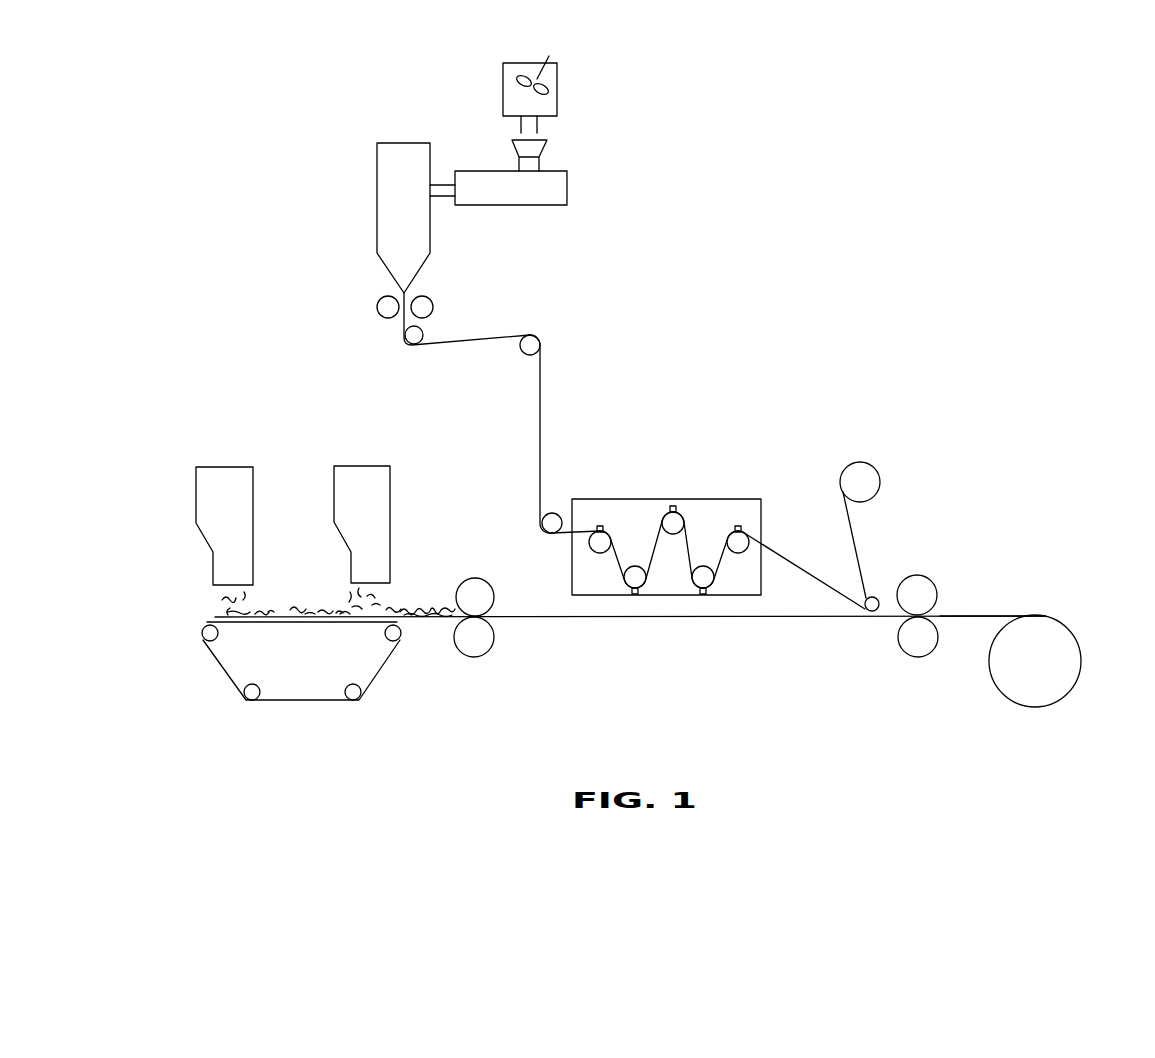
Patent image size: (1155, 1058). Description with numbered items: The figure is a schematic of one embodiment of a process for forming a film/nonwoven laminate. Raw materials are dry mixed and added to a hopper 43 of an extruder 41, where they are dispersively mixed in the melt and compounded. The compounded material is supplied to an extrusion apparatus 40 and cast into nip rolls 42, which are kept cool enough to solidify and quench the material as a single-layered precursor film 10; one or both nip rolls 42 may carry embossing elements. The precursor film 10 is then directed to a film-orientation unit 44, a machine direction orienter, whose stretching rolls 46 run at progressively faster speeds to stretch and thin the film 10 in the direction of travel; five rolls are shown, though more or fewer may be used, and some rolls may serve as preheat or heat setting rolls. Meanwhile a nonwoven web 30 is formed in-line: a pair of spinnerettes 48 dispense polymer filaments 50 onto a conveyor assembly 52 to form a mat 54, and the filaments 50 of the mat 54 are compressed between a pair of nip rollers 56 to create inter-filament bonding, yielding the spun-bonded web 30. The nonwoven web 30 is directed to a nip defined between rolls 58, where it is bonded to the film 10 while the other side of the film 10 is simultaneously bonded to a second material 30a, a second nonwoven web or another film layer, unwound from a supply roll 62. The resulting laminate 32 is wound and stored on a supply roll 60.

The precursor film 10 is at (475, 338).
The nonwoven web 30 is at (615, 617).
The second material 30a is at (852, 530).
The laminate 32 is at (997, 613).
The extrusion apparatus 40 is at (405, 152).
The extruder 41 is at (560, 190).
The nip rolls 42 is at (377, 303).
The hopper 43 is at (553, 103).
The film-orientation unit 44 is at (705, 490).
The stretching rolls 46 is at (599, 527).
The spinnerettes 48 is at (223, 465).
The polymer filaments 50 is at (352, 607).
The conveyor assembly 52 is at (320, 703).
The mat 54 is at (425, 608).
The nip rollers 56 is at (482, 577).
The rolls 58 is at (937, 585).
The supply roll 60 is at (1082, 660).
The supply roll 62 is at (868, 462).